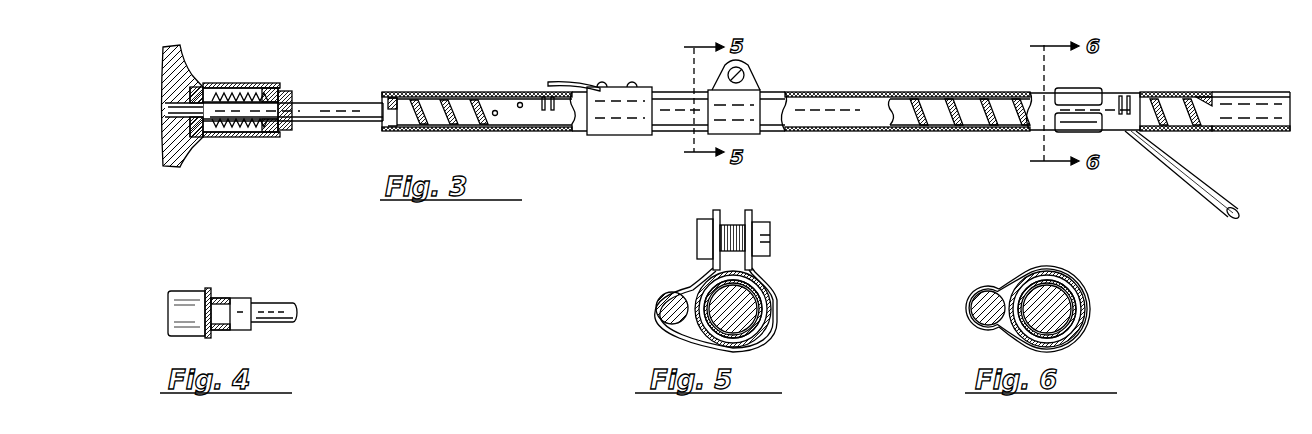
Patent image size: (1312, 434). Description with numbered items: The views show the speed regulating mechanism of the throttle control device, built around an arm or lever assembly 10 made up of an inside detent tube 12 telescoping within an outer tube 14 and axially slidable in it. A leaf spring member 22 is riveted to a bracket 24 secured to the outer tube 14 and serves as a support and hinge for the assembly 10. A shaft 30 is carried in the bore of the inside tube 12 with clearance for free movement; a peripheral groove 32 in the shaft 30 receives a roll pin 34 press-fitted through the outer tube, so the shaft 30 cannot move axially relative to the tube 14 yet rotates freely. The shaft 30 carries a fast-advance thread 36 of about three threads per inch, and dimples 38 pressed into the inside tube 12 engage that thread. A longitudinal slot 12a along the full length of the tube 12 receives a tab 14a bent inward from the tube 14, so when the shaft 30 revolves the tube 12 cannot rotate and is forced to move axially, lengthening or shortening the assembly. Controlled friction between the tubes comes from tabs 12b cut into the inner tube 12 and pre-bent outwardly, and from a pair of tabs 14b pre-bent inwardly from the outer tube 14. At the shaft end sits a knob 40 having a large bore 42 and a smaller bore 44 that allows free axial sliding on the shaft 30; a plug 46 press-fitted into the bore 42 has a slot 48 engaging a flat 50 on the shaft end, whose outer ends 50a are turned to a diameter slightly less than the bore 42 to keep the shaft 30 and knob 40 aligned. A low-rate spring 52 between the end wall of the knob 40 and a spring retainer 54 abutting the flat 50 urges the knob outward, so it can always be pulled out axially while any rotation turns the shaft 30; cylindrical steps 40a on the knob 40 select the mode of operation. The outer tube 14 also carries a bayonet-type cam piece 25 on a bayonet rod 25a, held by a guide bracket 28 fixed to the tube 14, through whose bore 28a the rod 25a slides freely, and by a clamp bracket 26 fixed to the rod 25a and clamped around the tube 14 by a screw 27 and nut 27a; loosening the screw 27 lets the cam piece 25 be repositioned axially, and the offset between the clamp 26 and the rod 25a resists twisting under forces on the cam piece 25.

In FIG. 3, the arm or lever assembly 10 is at (852, 131).
In FIG. 3, the inside detent tube 12 is at (514, 97).
In FIG. 5, the inside detent tube 12 is at (760, 318).
In FIG. 6, the inside detent tube 12 is at (1070, 328).
In FIG. 3, the longitudinal slot 12a is at (1246, 100).
In FIG. 5, the longitudinal slot 12a is at (762, 276).
In FIG. 6, the longitudinal slot 12a is at (1048, 282).
In FIG. 3, the tabs 12b is at (545, 96).
In FIG. 3, the outside tube 14 is at (672, 120).
In FIG. 5, the outside tube 14 is at (702, 338).
In FIG. 6, the outside tube 14 is at (1088, 306).
In FIG. 3, the tab 14a is at (1208, 104).
In FIG. 3, the tabs 14b is at (1126, 97).
In FIG. 3, the leaf spring member 22 is at (572, 84).
In FIG. 3, the bracket 24 is at (617, 105).
In FIG. 3, the cam piece 25 is at (1192, 180).
In FIG. 5, the bayonet rod 25a is at (668, 310).
In FIG. 6, the bayonet rod 25a is at (990, 314).
In FIG. 3, the clamp bracket 26 is at (748, 128).
In FIG. 5, the clamp bracket 26 is at (695, 282).
In FIG. 3, the screw 27 is at (746, 76).
In FIG. 5, the screw 27 is at (762, 226).
In FIG. 5, the nut 27a is at (705, 219).
In FIG. 3, the guide bracket 28 is at (1076, 96).
In FIG. 6, the guide bracket 28 is at (1040, 270).
In FIG. 6, the bore 28a is at (990, 292).
In FIG. 3, the shaft 30 is at (326, 105).
In FIG. 4, the shaft 30 is at (276, 305).
In FIG. 5, the shaft 30 is at (762, 330).
In FIG. 6, the shaft 30 is at (1086, 290).
In FIG. 3, the peripheral groove 32 is at (388, 128).
In FIG. 3, the roll pin 34 is at (394, 98).
In FIG. 3, the thread 36 is at (447, 108).
In FIG. 5, the thread 36 is at (765, 305).
In FIG. 6, the thread 36 is at (1030, 294).
In FIG. 3, the dimples 38 is at (497, 110).
In FIG. 3, the knob 40 is at (266, 137).
In FIG. 3, the cylindrical steps 40a is at (288, 138).
In FIG. 3, the large bore 42 is at (248, 86).
In FIG. 3, the smaller bore 44 is at (292, 91).
In FIG. 3, the plug 46 is at (188, 62).
In FIG. 3, the slot 48 is at (193, 95).
In FIG. 3, the flat 50 is at (192, 150).
In FIG. 4, the flat 50 is at (192, 330).
In FIG. 4, the outer ends 50a is at (185, 292).
In FIG. 3, the low-rate spring 52 is at (265, 93).
In FIG. 3, the spring retainer 54 is at (252, 128).
In FIG. 4, the spring retainer 54 is at (212, 292).